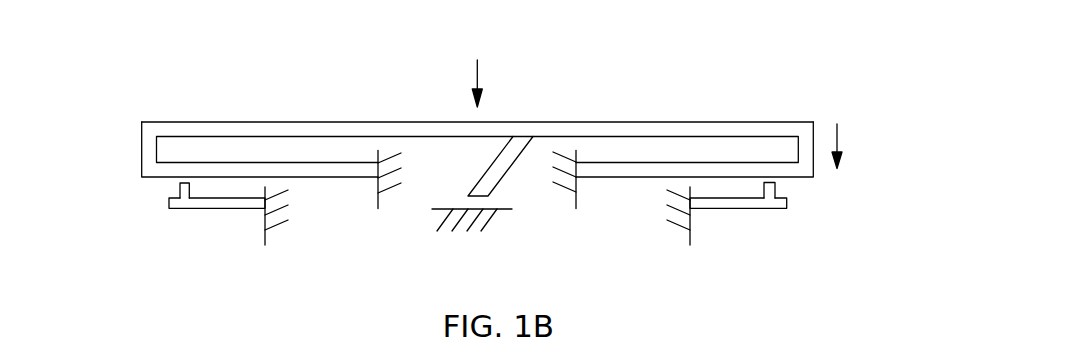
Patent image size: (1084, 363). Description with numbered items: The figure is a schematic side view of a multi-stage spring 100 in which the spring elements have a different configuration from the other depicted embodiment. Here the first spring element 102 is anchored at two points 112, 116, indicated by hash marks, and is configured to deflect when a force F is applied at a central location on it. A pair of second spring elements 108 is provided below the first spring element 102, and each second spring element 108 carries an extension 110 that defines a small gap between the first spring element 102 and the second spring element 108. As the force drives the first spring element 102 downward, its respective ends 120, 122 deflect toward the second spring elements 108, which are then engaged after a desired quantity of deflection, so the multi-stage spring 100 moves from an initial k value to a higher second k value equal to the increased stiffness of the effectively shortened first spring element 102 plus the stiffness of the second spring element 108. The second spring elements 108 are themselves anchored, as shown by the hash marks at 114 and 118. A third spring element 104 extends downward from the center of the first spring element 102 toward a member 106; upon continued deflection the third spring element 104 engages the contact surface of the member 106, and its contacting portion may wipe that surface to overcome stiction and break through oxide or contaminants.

The multi-stage spring 100 is at (611, 47).
The first spring element 102 is at (738, 122).
The third spring element 104 is at (510, 170).
The member 106 is at (455, 209).
The second spring element 108 is at (212, 209).
The extension 110 is at (178, 186).
The anchor point 112 is at (576, 190).
The anchor point 114 is at (692, 230).
The anchor point 116 is at (378, 192).
The fixed mount 118 is at (264, 224).
The end of first spring element 120 is at (798, 122).
The end of first spring element 122 is at (156, 122).